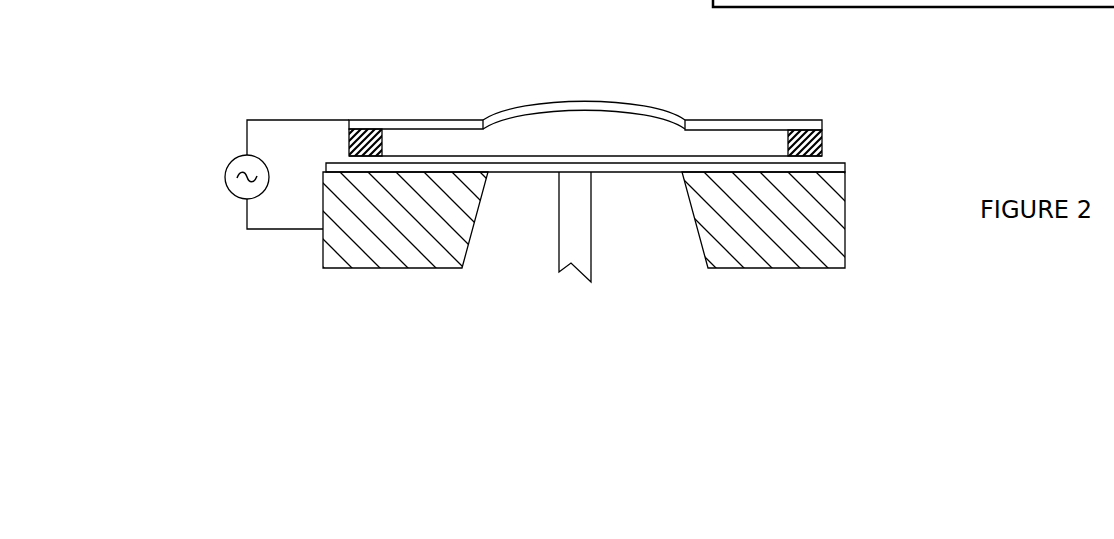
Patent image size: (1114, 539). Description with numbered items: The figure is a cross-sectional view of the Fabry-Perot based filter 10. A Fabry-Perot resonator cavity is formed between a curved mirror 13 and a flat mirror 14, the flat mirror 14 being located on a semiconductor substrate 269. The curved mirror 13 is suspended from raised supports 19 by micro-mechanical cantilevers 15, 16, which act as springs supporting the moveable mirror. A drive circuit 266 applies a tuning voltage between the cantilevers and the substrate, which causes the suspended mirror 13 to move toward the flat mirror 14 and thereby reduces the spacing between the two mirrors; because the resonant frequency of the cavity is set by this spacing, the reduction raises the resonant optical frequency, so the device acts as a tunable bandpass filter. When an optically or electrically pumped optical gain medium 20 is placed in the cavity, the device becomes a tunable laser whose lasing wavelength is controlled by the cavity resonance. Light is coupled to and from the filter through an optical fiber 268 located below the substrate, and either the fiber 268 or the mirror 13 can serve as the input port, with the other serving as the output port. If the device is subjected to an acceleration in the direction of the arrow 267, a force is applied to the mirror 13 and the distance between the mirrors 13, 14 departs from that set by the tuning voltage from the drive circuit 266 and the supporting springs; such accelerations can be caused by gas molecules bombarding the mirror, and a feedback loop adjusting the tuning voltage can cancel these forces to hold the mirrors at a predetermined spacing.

The Fabry-Perot based filter 10 is at (318, 63).
The curved mirror 13 is at (562, 105).
The flat mirror 14 is at (647, 174).
The micro-mechanical cantilever 15 is at (758, 126).
The micro-mechanical cantilever 16 is at (438, 120).
The raised support 19 is at (823, 137).
The optical gain medium 20 is at (349, 156).
The drive circuit 266 is at (235, 193).
The arrow 267 is at (598, 37).
The optical fiber 268 is at (592, 238).
The semiconductor substrate 269 is at (837, 205).